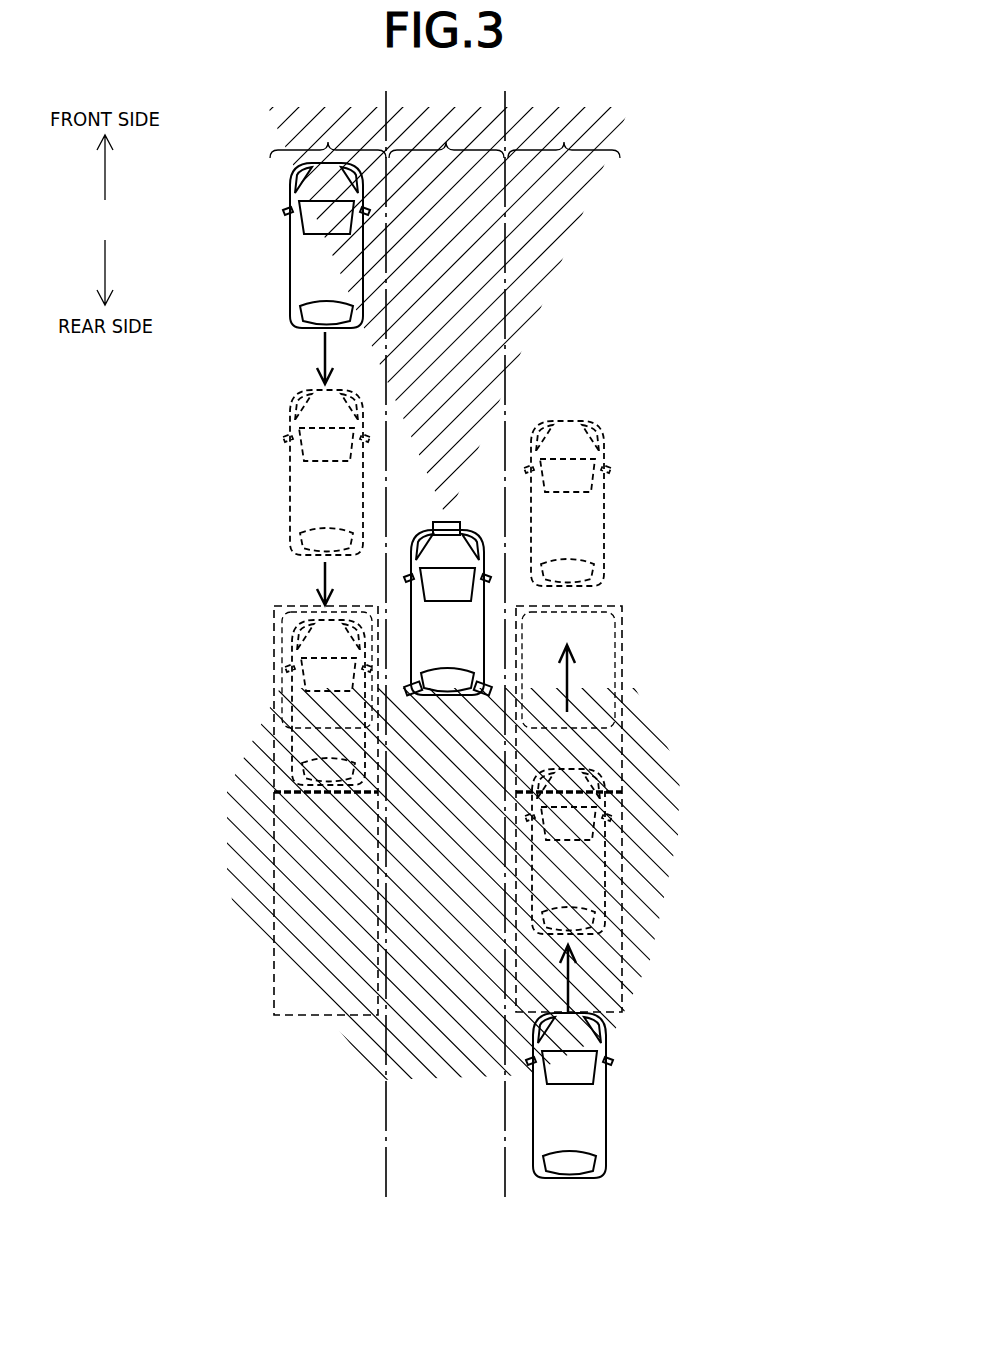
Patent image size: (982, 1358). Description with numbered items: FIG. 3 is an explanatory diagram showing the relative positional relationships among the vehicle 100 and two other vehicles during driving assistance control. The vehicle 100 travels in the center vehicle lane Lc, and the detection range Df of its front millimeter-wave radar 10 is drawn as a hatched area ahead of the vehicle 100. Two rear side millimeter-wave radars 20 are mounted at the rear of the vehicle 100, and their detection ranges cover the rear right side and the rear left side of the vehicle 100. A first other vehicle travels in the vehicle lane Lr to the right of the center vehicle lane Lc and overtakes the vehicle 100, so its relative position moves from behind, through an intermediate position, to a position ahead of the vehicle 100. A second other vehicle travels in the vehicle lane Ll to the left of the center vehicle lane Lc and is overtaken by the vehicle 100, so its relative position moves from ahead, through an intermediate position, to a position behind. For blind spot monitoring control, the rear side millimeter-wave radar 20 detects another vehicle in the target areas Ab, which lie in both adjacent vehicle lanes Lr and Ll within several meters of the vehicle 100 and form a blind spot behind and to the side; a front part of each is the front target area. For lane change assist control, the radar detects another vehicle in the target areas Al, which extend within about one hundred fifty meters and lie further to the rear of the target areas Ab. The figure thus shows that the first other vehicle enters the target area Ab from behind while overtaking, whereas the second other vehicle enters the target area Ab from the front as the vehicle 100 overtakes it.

The front millimeter-wave radar 10 is at (432, 527).
The vehicle 100 is at (484, 557).
The rear side millimeter-wave radar 20 is at (408, 686).
The detection range Df is at (548, 262).
The target area Ab is at (275, 615).
The target area Al is at (272, 990).
The vehicle lane Ll is at (328, 137).
The center vehicle lane Lc is at (446, 137).
The vehicle lane Lr is at (564, 137).